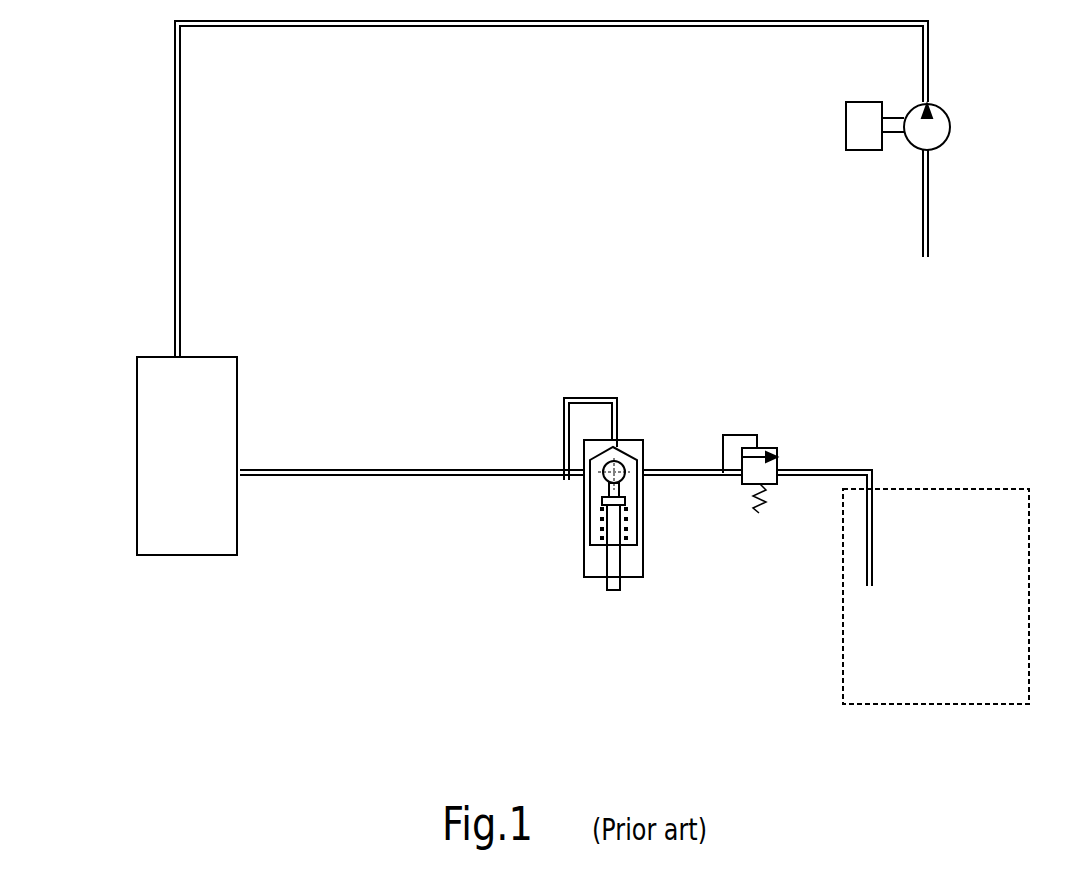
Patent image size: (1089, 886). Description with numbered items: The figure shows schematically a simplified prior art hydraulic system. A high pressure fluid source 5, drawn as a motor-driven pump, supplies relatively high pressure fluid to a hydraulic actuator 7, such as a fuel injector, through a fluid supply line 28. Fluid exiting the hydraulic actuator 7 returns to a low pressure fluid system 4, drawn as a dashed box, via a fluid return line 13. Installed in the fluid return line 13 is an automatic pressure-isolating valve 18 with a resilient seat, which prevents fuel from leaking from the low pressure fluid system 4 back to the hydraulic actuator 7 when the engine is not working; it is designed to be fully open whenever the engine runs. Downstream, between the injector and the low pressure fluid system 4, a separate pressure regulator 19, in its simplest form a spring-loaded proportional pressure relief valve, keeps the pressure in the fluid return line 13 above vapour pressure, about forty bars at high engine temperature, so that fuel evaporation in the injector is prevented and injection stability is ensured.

The low pressure fluid system 4 is at (1015, 704).
The high pressure fluid source 5 is at (950, 117).
The hydraulic actuator 7 is at (148, 448).
The fluid return line 13 is at (412, 477).
The automatic pressure-isolating valve 18 is at (628, 438).
The pressure regulator 19 is at (767, 448).
The fluid supply line 28 is at (175, 178).